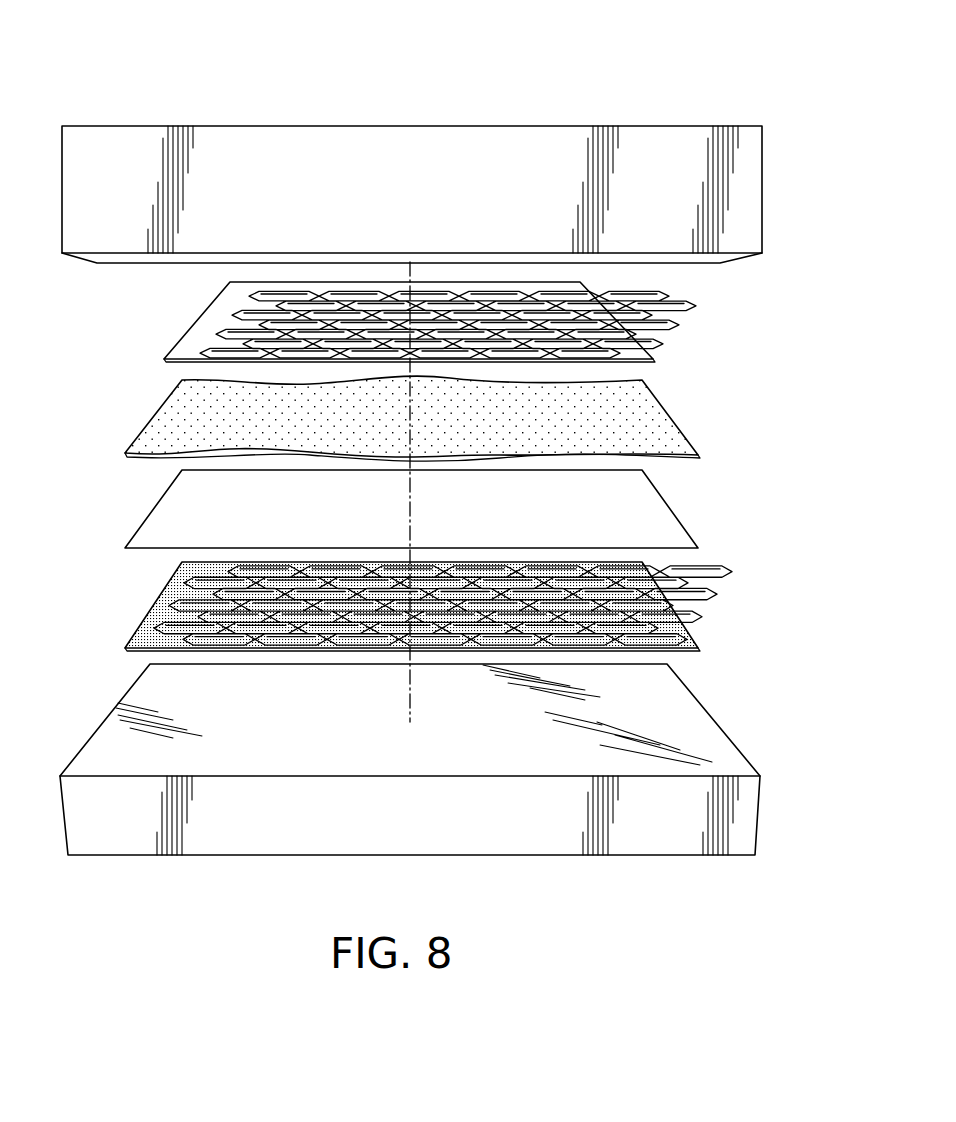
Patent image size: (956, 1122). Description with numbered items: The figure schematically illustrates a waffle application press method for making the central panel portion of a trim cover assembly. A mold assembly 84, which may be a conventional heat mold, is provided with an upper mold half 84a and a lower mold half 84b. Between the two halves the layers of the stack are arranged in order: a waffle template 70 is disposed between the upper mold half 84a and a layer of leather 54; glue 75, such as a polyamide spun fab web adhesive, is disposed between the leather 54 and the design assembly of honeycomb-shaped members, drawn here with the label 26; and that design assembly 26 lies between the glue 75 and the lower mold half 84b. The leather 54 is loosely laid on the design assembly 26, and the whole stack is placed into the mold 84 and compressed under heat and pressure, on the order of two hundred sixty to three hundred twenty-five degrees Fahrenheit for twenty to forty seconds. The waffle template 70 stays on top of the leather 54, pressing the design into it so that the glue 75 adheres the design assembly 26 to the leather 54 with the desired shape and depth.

The mold assembly 84 is at (266, 112).
The upper mold half 84a is at (507, 125).
The lower mold half 84b is at (713, 717).
The waffle template 70 is at (612, 313).
The leather layer 54 is at (670, 413).
The glue 75 is at (668, 503).
The honeycomb panel with fill (26, 26a) 26 is at (672, 593).